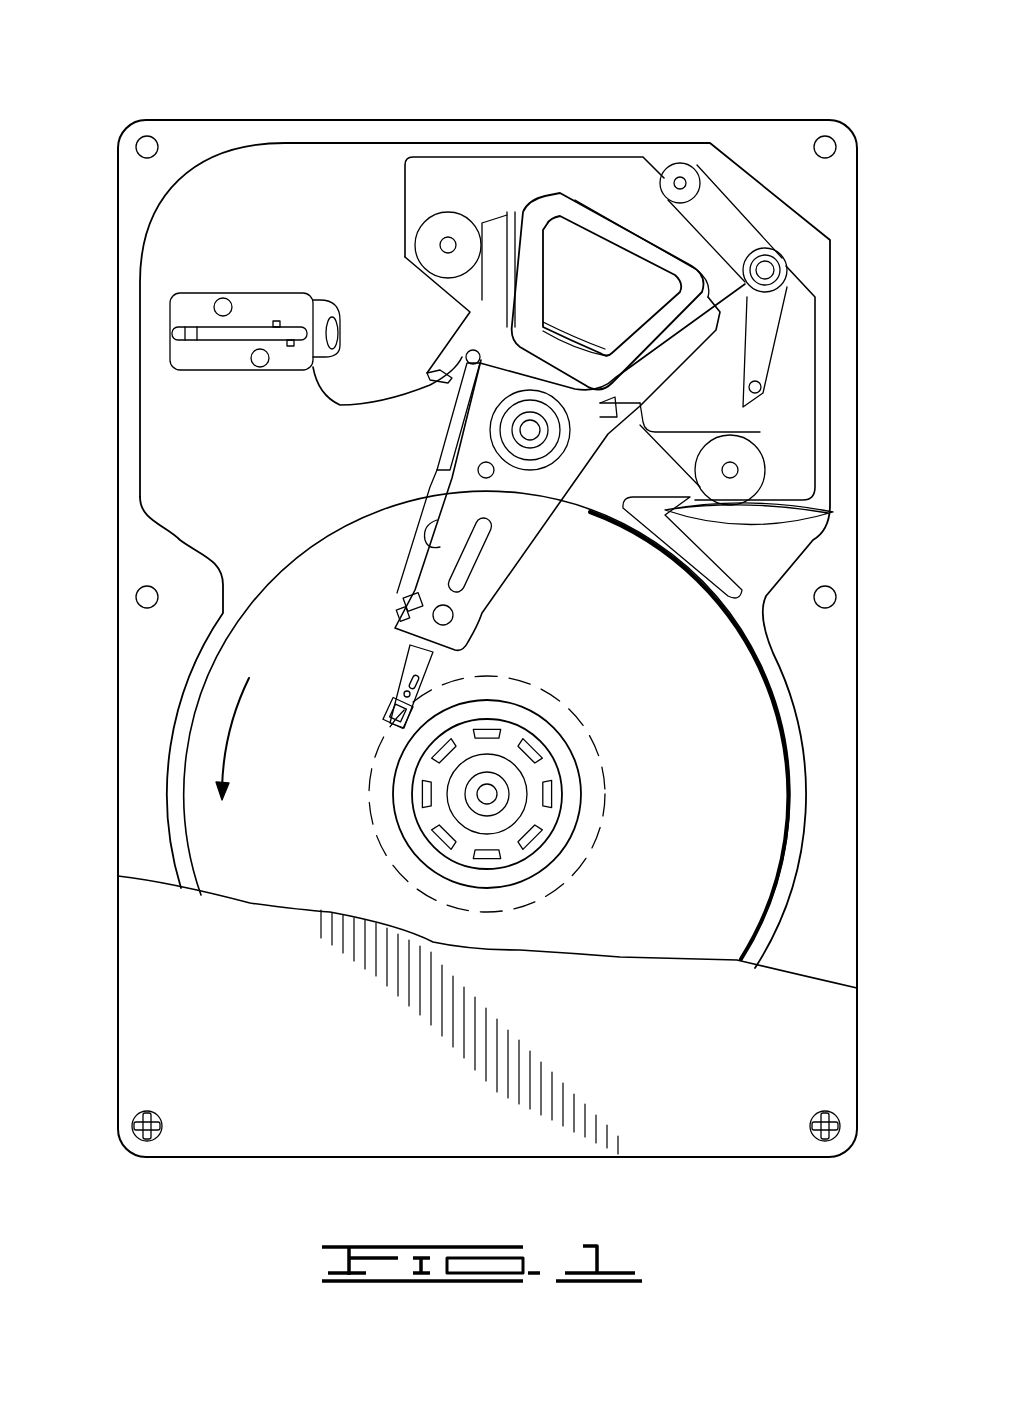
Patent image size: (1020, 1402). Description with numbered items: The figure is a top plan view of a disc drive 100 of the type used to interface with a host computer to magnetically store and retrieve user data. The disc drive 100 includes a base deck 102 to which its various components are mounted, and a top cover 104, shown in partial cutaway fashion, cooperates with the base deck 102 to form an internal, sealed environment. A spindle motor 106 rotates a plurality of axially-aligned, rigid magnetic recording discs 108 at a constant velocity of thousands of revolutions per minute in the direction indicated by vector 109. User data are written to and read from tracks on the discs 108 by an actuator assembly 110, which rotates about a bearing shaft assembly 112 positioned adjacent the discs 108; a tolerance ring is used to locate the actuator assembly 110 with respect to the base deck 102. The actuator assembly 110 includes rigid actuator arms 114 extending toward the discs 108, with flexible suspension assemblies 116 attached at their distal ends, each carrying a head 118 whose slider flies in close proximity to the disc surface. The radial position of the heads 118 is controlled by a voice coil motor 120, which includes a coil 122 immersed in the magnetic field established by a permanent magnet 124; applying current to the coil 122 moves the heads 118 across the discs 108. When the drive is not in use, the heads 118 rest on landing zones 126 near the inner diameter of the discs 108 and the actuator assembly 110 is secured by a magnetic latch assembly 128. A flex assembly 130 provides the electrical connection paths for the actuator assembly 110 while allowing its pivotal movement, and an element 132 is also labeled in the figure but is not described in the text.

The disc drive 100 is at (220, 78).
The base deck 102 is at (175, 447).
The top cover 104 is at (172, 955).
The spindle motor 106 is at (524, 789).
The magnetic recording discs 108 is at (765, 805).
The vector 109 is at (234, 738).
The actuator assembly 110 is at (502, 509).
The bearing shaft assembly 112 is at (540, 440).
The actuator arms 114 is at (483, 572).
The flexible suspension assemblies 116 is at (405, 667).
The head 118 is at (388, 712).
The voice coil motor 120 is at (553, 172).
The coil 122 is at (657, 327).
The permanent magnet 124 is at (722, 408).
The landing zones 126 is at (568, 710).
The magnetic latch assembly 128 is at (618, 178).
The flex assembly 130 is at (366, 392).
The flex circuit bracket 132 is at (435, 421).